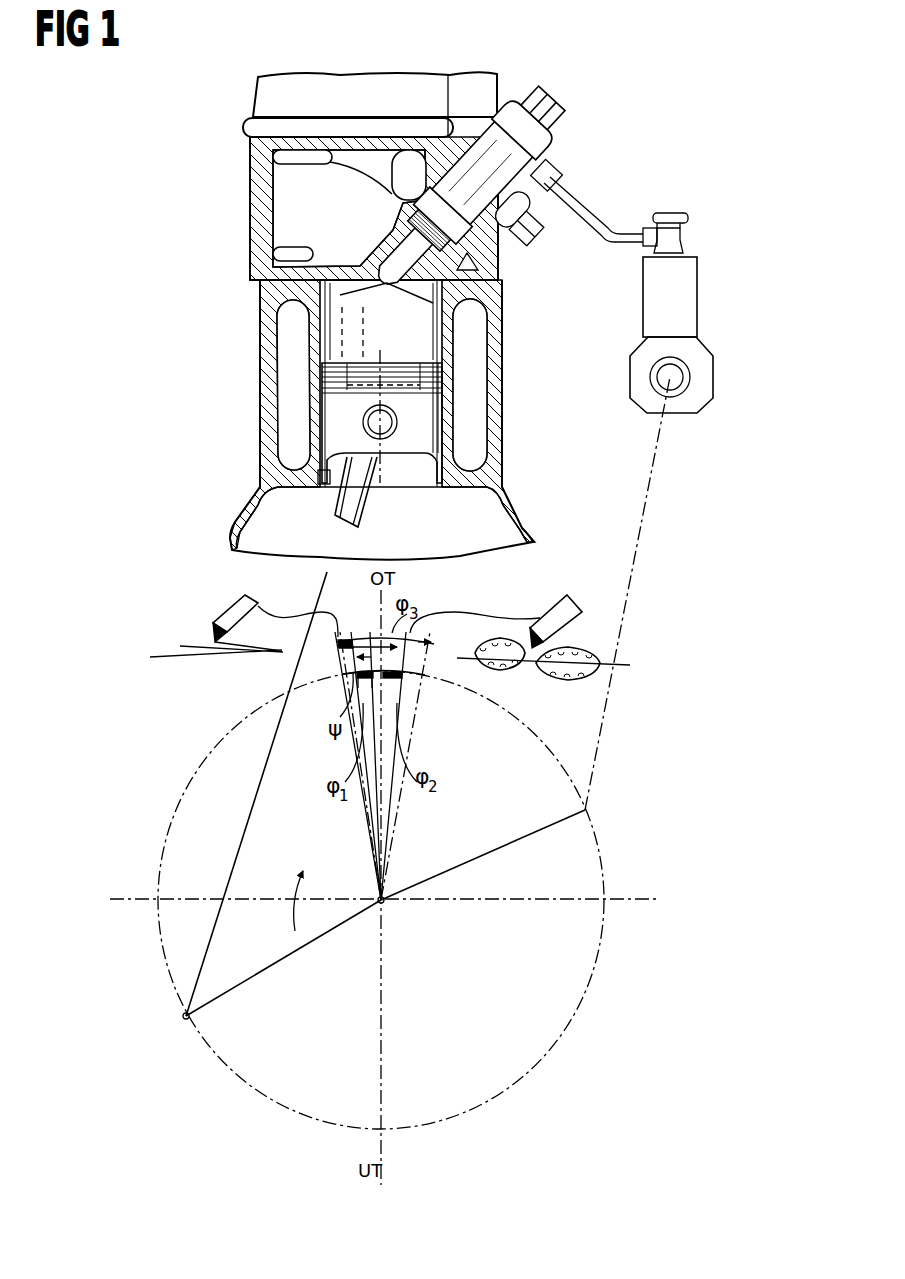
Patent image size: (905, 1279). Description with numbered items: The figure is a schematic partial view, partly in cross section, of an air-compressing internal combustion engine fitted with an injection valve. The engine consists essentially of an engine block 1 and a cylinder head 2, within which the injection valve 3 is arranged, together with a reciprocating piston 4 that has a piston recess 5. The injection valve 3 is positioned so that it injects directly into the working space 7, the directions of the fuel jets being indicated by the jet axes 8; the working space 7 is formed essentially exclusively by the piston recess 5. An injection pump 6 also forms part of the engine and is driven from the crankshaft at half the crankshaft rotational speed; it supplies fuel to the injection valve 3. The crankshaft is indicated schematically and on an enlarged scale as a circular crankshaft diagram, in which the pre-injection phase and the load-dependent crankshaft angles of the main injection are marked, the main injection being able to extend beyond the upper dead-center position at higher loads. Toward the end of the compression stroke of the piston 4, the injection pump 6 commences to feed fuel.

The engine block 1 is at (500, 340).
The cylinder head 2 is at (262, 218).
The injection valve 3 is at (503, 258).
The reciprocating piston 4 is at (398, 445).
The piston recess 5 is at (357, 387).
The injection pump 6 is at (698, 320).
The working space 7 is at (350, 323).
The jet axes 8 is at (417, 300).